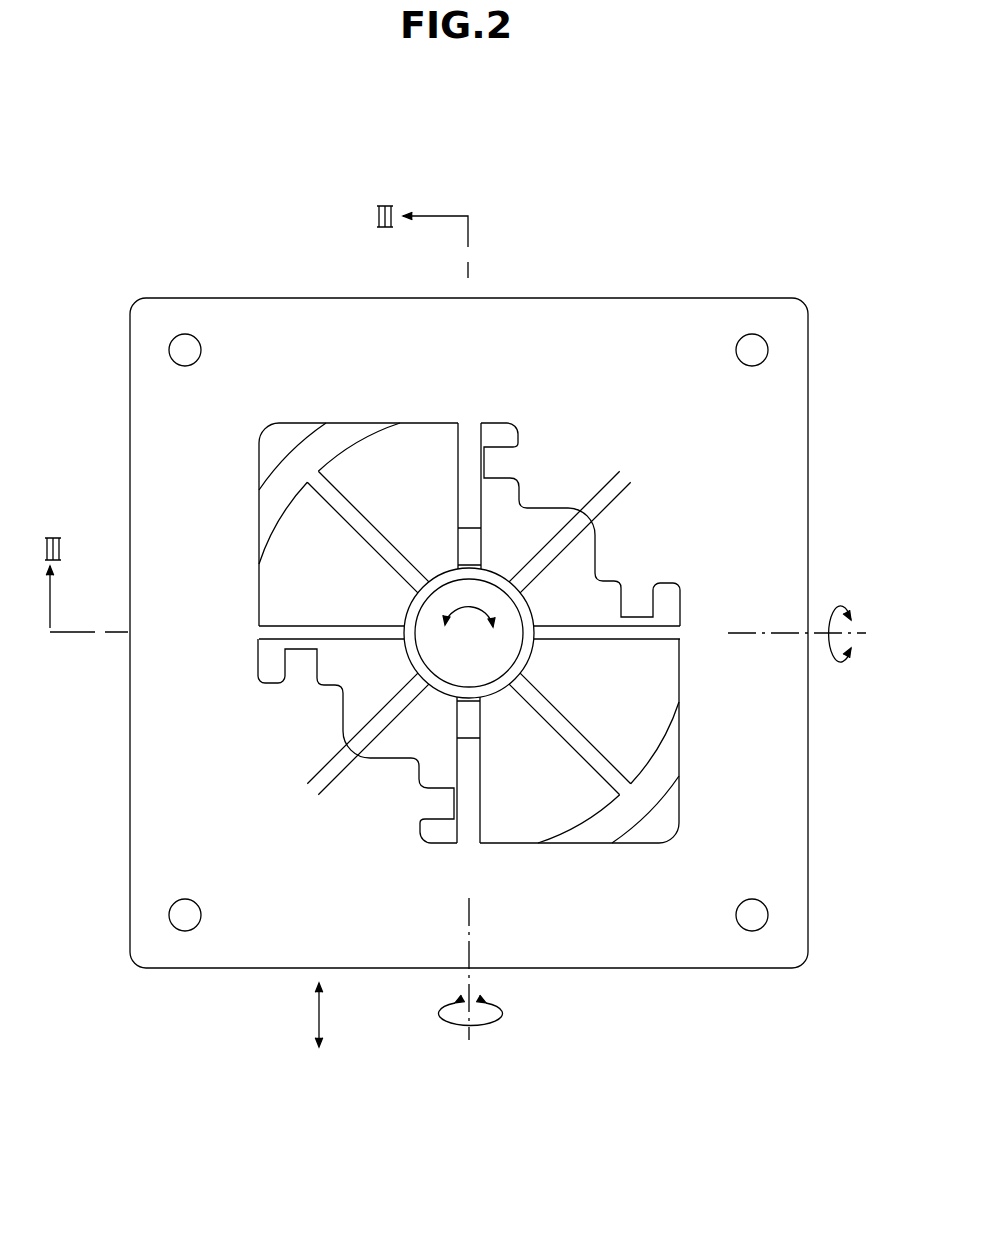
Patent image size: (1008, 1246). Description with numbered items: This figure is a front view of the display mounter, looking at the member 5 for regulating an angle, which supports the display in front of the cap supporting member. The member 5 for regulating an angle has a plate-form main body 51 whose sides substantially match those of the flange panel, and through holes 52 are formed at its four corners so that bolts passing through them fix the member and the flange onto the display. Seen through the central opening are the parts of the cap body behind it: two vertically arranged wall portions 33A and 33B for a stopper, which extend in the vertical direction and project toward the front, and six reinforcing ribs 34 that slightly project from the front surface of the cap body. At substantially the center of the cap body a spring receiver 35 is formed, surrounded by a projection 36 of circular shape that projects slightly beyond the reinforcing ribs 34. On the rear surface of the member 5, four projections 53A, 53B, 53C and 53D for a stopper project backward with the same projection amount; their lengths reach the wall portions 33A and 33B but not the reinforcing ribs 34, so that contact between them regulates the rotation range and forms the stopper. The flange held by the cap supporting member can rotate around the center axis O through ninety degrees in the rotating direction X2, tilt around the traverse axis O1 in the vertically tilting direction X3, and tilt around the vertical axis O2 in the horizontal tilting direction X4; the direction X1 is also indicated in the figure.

The member for regulating an angle 5 is at (642, 255).
The plate-form main body 51 is at (548, 298).
The through holes 52 is at (183, 334).
The projection for a stopper 53A is at (303, 657).
The projection for a stopper 53B is at (453, 797).
The projection for a stopper 53C is at (629, 611).
The projection for a stopper 53D is at (493, 473).
The wall portion for a stopper 33A is at (467, 472).
The wall portion for a stopper 33B is at (474, 796).
The reinforcing ribs 34 is at (400, 702).
The spring receiver 35 is at (460, 697).
The projection 36 is at (492, 687).
The center axis O is at (470, 630).
The traverse axis O1 is at (817, 635).
The vertical axis O2 is at (470, 983).
The translation direction X1 is at (337, 1015).
The rotating direction X2 is at (494, 647).
The vertically tilting direction X3 is at (845, 652).
The horizontal tilting direction X4 is at (487, 1013).